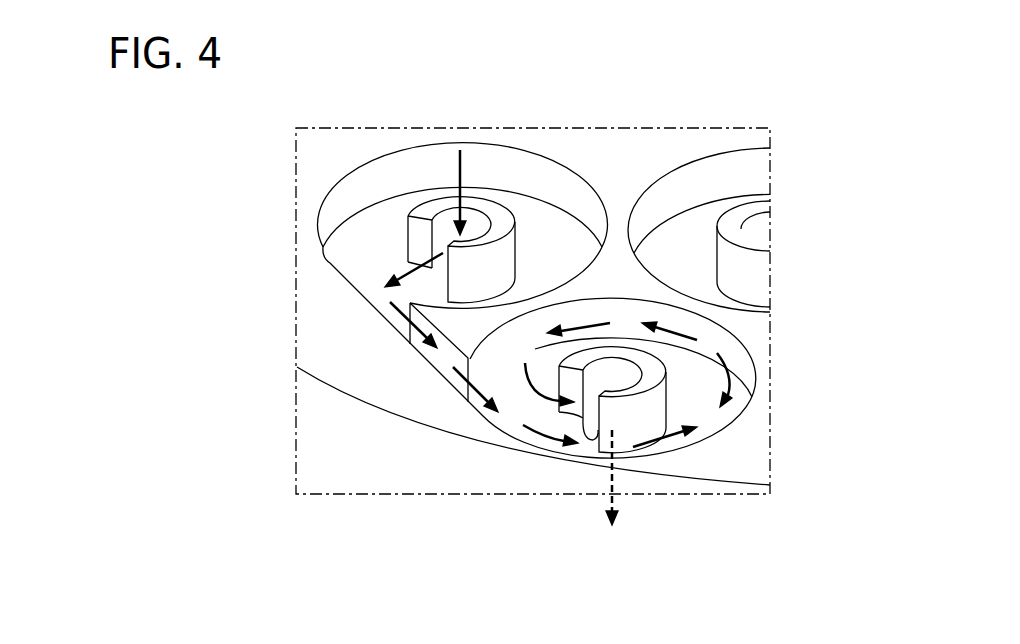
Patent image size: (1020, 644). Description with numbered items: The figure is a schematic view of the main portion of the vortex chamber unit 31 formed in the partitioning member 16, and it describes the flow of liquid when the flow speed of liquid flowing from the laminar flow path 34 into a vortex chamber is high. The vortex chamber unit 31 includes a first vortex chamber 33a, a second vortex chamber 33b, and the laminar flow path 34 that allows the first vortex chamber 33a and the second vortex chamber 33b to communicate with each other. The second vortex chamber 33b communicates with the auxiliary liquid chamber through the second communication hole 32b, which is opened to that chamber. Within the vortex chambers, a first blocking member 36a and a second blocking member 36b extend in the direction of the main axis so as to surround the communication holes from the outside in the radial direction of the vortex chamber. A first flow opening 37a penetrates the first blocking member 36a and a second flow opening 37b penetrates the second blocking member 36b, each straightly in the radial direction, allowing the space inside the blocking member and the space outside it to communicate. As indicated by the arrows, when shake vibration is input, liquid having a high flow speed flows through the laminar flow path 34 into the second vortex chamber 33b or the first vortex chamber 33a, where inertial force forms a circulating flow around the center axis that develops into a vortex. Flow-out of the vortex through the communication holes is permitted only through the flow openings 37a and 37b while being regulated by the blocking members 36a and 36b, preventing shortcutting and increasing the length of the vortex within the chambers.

The partitioning member 16 is at (755, 116).
The vortex chamber unit 31 is at (341, 173).
The first vortex chamber 33a is at (550, 176).
The second vortex chamber 33b is at (755, 405).
The laminar flow path 34 is at (440, 362).
The first blocking member 36a is at (498, 217).
The second blocking member 36b is at (645, 423).
The first flow opening 37a is at (417, 237).
The second flow opening 37b is at (583, 428).
The second communication hole 32b is at (590, 437).